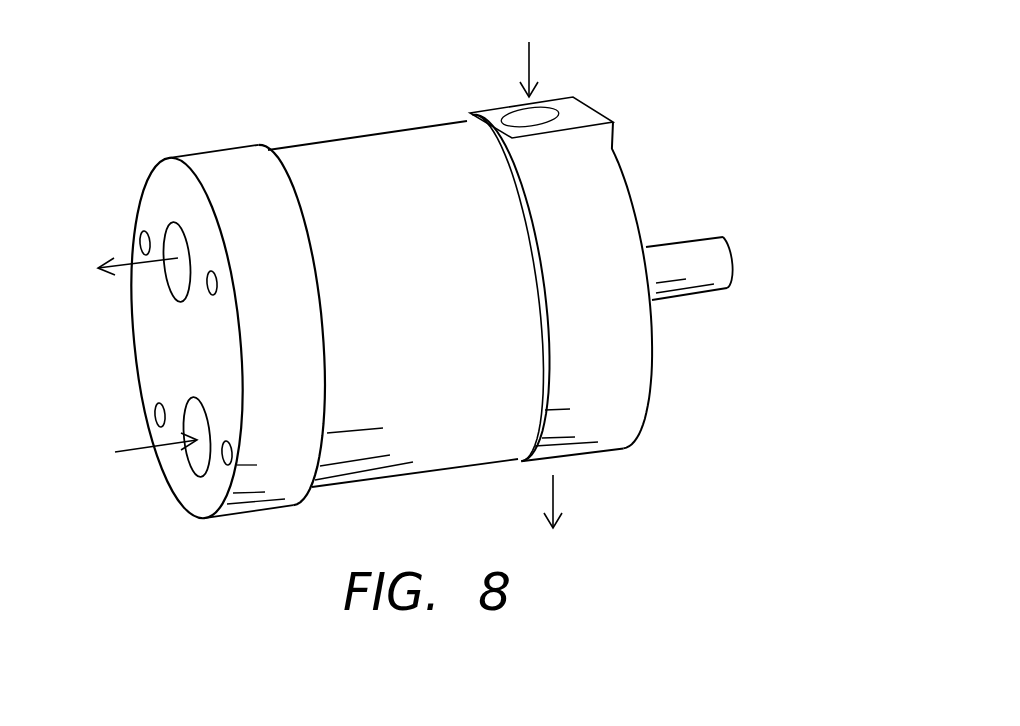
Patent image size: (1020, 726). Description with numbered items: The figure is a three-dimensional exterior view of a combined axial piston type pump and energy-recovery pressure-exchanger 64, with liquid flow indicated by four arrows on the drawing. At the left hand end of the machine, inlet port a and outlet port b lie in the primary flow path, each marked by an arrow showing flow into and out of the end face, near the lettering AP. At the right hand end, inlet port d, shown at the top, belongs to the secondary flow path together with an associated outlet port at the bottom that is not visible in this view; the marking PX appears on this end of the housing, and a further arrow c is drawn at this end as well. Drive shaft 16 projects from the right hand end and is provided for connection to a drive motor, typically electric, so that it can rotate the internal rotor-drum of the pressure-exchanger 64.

The combined axial piston type pump and energy-recovery pressure-exchanger 64 is at (437, 329).
The drive shaft 16 is at (695, 258).
The inlet port a is at (156, 461).
The outlet port b is at (138, 291).
The flow direction arrow c is at (556, 63).
The inlet port d is at (590, 500).
The port AP is at (101, 379).
The port PX is at (678, 373).